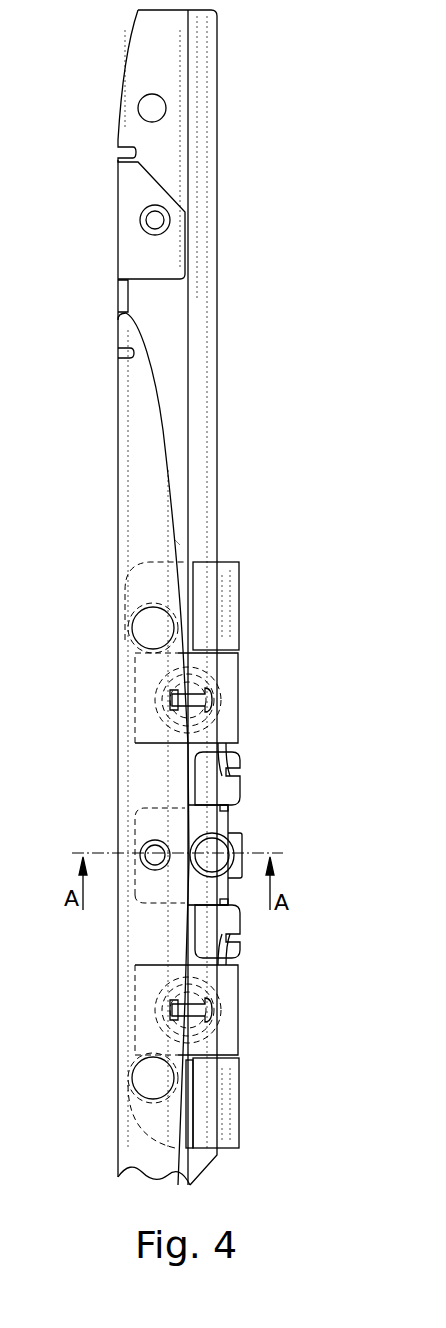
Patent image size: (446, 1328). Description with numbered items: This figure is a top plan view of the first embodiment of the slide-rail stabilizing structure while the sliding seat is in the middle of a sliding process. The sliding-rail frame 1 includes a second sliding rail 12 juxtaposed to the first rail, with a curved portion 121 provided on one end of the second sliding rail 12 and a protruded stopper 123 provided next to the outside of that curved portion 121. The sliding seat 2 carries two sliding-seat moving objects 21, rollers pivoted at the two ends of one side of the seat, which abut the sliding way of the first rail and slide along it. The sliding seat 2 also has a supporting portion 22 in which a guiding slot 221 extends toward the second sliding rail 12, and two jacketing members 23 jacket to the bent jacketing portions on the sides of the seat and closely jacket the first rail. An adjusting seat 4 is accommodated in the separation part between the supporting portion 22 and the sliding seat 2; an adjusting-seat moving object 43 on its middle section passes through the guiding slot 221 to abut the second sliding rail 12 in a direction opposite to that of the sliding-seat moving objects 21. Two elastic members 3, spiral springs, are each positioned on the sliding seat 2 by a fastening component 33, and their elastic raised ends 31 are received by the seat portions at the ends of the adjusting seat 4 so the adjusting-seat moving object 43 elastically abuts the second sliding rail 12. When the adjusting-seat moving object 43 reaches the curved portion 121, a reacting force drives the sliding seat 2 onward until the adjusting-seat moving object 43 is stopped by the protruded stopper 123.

The sliding-rail frame 1 is at (135, 60).
The protruded stopper 123 is at (132, 248).
The curved portion 121 is at (155, 360).
The second sliding rail 12 is at (180, 545).
The sliding seat 2 is at (152, 1140).
The sliding-seat moving object 21 is at (128, 580).
The supporting portion 22 is at (165, 826).
The guiding slot 221 is at (245, 818).
The jacketing member 23 is at (240, 576).
The elastic member 3 is at (244, 700).
The elastic raised end 31 is at (212, 798).
The fastening component 33 is at (248, 663).
The adjusting seat 4 is at (205, 903).
The adjusting-seat moving object 43 is at (140, 853).